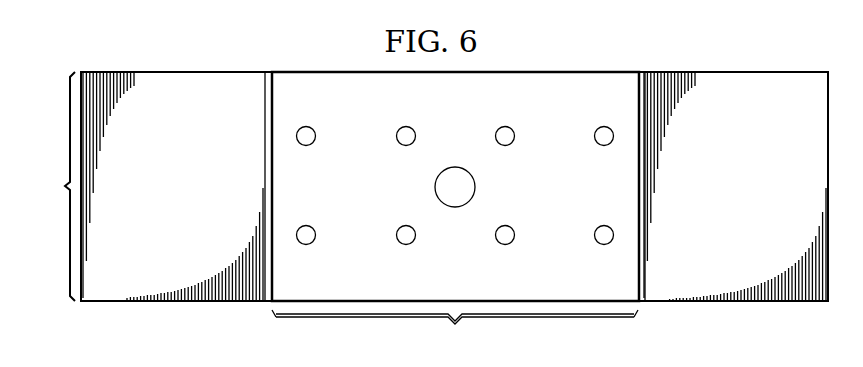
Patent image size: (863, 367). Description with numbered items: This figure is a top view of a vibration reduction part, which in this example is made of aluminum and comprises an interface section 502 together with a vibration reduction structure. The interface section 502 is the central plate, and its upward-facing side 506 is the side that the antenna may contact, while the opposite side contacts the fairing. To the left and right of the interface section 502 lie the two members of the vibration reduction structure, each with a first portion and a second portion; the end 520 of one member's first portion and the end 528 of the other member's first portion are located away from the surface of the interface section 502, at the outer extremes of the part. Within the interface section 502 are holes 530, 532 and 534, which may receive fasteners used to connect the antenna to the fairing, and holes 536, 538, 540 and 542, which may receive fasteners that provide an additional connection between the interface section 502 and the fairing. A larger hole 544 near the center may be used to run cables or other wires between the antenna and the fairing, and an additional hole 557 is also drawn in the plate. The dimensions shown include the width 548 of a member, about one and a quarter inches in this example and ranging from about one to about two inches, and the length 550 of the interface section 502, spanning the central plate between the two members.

The interface section 502 is at (532, 197).
The side 506 is at (340, 80).
The end 520 is at (160, 80).
The end 528 is at (749, 78).
The hole 530 is at (406, 136).
The hole 532 is at (505, 136).
The hole 534 is at (505, 236).
The hole 536 is at (306, 136).
The hole 538 is at (604, 136).
The hole 540 is at (604, 236).
The hole 542 is at (306, 236).
The hole 544 is at (457, 190).
The aperture 557 is at (406, 236).
The width 548 is at (48, 186).
The length 550 is at (455, 331).